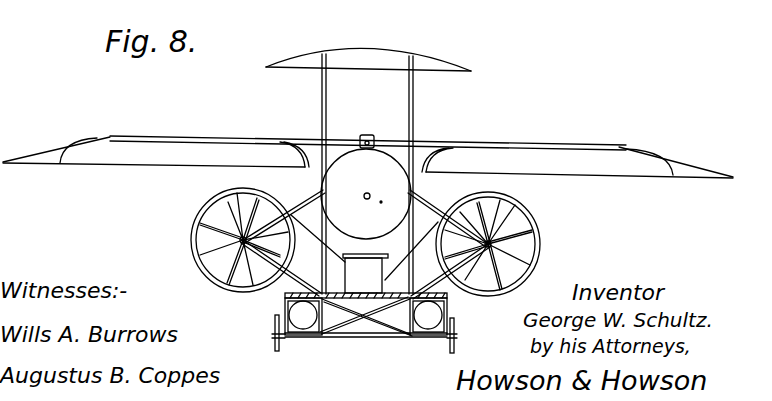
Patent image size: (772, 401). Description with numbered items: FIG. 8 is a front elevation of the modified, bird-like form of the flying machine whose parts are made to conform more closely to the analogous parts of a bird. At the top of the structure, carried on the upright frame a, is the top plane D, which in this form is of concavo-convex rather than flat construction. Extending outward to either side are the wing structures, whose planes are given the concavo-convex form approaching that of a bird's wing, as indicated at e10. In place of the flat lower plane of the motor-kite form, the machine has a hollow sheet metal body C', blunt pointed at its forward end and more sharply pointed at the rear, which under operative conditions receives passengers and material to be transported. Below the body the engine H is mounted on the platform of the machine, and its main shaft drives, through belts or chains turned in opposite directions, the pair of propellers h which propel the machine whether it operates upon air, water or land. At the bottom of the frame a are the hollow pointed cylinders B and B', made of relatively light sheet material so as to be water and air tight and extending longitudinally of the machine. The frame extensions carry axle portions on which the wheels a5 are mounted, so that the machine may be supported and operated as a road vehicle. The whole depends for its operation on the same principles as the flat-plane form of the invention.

The top aeroplane D is at (368, 44).
The upright frame a is at (326, 118).
The concavo-convex wing plane e10 is at (575, 172).
The hollow sheet metal body C' is at (366, 194).
The propeller h is at (205, 243).
The engine H is at (365, 273).
The hollow pointed cylinder B is at (303, 316).
The hollow pointed cylinder B' is at (428, 316).
The wheel a5 is at (464, 351).